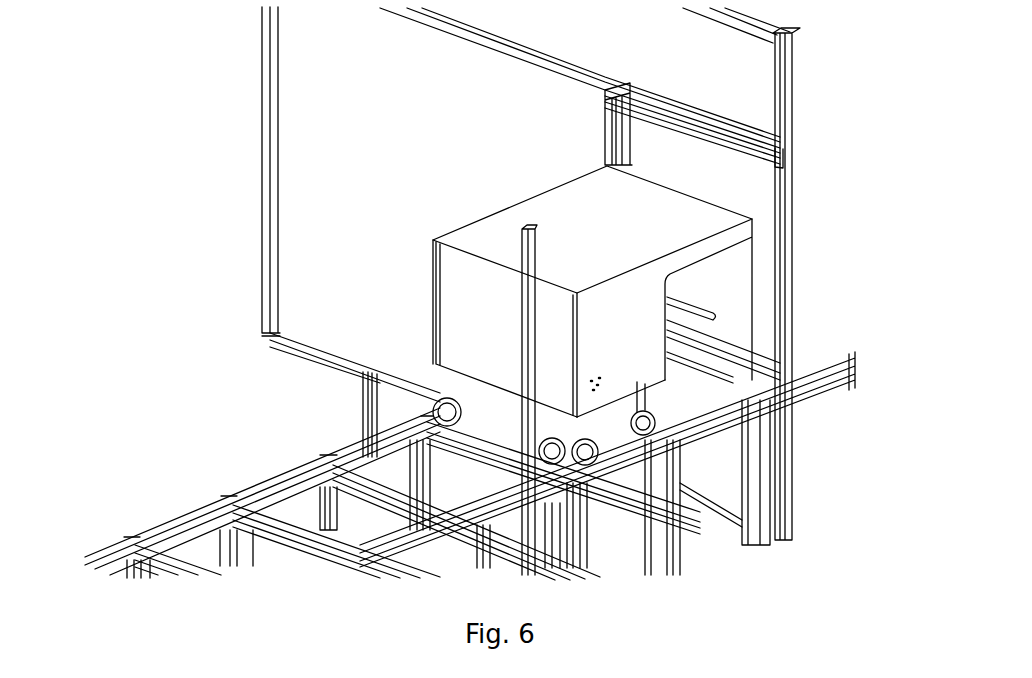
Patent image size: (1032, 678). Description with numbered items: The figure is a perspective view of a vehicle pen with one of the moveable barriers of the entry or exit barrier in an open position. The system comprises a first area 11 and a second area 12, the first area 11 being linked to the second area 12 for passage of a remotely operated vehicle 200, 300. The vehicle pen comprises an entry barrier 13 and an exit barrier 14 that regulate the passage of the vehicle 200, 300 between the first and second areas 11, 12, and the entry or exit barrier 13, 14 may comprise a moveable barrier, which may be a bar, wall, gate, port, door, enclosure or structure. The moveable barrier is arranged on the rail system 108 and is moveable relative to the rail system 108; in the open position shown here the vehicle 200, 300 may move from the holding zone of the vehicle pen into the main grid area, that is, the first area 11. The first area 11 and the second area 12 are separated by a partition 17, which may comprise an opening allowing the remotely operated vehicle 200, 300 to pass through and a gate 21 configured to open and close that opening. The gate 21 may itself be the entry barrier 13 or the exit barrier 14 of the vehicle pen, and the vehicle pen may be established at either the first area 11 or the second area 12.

The first area 11 is at (290, 449).
The second area 12 is at (808, 331).
The entry barrier 13 is at (648, 291).
The exit barrier 14 is at (648, 291).
The partition 17 is at (280, 167).
The gate 21 is at (730, 192).
The rail system 108 is at (152, 535).
The remotely operated vehicle 200 is at (546, 315).
The remotely operated vehicle 300 is at (475, 296).